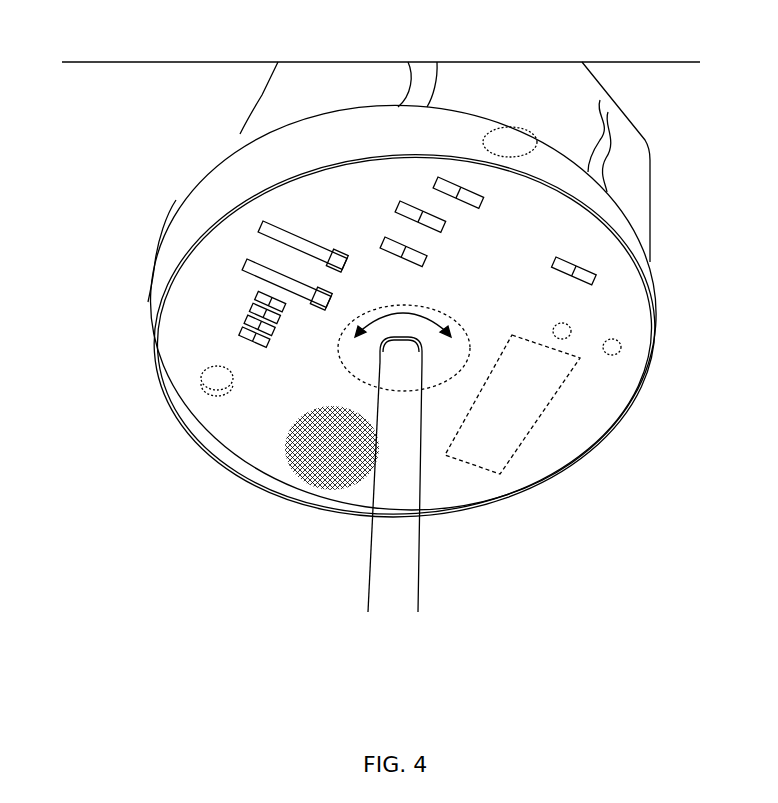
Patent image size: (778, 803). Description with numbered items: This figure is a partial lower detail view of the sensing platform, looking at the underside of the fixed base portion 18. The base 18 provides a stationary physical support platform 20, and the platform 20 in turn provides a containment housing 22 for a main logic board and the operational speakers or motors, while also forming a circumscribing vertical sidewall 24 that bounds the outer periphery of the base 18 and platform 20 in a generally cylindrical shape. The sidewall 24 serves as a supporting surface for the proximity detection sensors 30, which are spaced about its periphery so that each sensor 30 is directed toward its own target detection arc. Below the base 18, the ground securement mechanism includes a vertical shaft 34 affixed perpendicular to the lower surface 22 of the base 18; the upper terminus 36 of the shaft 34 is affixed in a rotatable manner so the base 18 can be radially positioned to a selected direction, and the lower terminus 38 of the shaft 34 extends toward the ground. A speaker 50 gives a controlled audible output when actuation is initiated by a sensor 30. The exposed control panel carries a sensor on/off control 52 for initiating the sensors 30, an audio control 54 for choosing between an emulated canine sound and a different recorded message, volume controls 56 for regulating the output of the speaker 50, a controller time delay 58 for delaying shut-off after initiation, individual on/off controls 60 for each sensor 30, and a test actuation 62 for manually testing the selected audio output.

The fixed base portion 18 is at (536, 472).
The stationary physical support platform 20 is at (220, 158).
The containment housing 22 is at (236, 434).
The circumscribing vertical sidewall 24 is at (186, 209).
The proximity detection sensor 30 is at (520, 148).
The vertical shaft 34 is at (406, 578).
The upper terminus 36 is at (390, 362).
The lower terminus 38 is at (448, 359).
The speaker 50 is at (325, 490).
The sensor on/off control 52 is at (600, 265).
The audio control 54 is at (417, 203).
The volume controls 56 is at (245, 268).
The controller time delay 58 is at (260, 203).
The on/off control 60 is at (160, 343).
The test actuation 62 is at (195, 393).